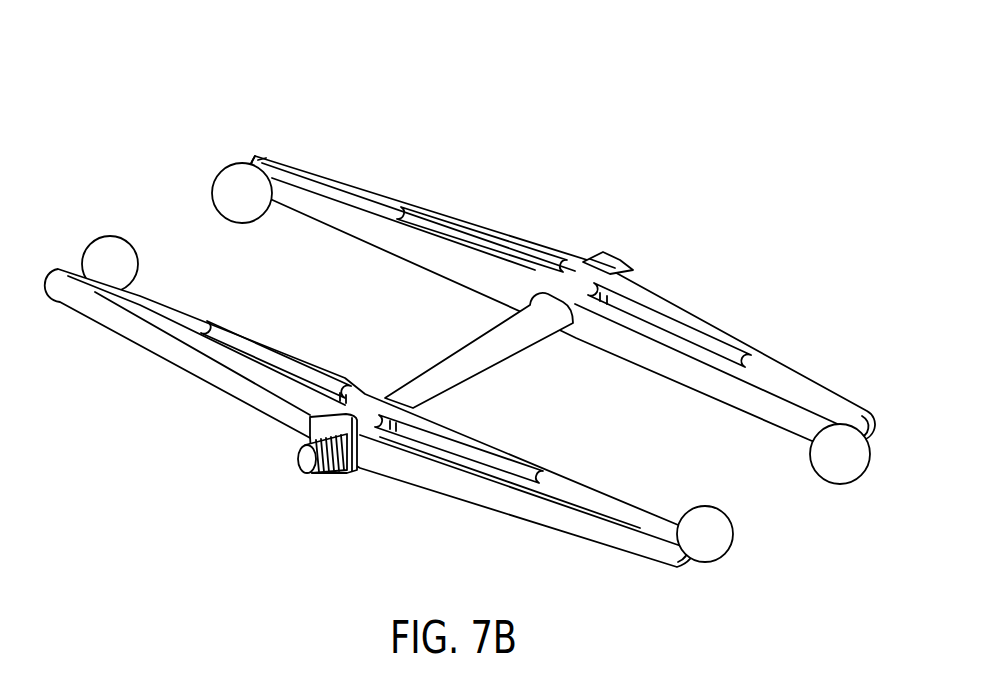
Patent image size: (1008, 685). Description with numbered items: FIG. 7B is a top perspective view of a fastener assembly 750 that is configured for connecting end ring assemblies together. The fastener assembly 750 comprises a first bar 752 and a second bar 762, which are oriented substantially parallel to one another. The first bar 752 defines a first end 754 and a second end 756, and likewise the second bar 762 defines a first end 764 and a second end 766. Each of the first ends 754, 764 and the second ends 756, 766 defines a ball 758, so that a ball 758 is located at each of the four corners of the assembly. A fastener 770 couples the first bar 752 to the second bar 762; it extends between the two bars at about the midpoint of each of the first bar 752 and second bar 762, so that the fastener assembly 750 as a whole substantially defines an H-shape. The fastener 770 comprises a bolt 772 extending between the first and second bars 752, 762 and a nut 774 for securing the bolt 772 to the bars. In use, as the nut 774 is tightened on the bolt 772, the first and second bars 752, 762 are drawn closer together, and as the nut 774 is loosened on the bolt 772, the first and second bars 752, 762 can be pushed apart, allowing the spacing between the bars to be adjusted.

The fastener assembly 750 is at (459, 343).
The first bar 752 is at (369, 447).
The first end 754 is at (74, 297).
The second end 756 is at (665, 553).
The ball 758 is at (102, 252).
The second bar 762 is at (562, 265).
The first end 764 is at (275, 155).
The second end 766 is at (840, 408).
The fastener 770 is at (369, 447).
The bolt 772 is at (480, 358).
The nut 774 is at (356, 450).